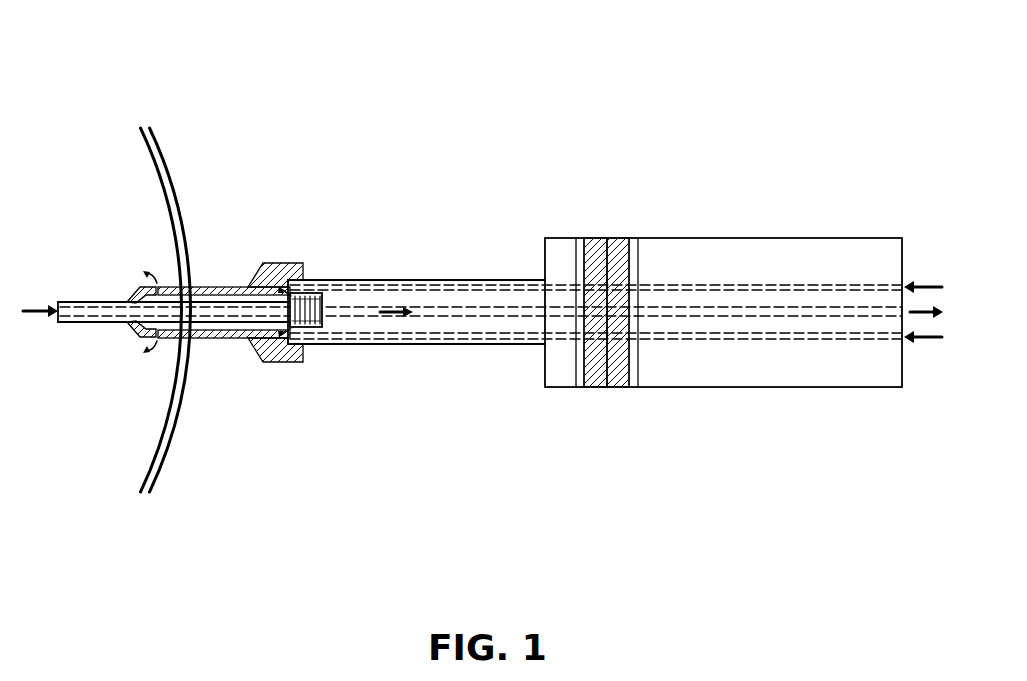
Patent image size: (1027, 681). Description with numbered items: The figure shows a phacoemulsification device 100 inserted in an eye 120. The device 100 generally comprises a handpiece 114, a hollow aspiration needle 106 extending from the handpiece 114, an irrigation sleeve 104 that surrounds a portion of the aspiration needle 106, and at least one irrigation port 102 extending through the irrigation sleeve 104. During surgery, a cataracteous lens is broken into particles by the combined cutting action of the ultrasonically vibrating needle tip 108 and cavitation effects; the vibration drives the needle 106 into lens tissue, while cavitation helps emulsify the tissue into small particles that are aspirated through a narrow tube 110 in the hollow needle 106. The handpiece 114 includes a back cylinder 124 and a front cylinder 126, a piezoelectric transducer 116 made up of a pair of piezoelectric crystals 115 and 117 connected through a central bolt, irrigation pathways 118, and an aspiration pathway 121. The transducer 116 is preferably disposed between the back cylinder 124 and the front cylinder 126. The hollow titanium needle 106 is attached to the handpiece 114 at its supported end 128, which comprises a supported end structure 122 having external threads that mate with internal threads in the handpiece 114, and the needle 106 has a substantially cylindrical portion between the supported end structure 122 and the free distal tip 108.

The phacoemulsification device 100 is at (526, 22).
The irrigation port 102 is at (156, 360).
The irrigation sleeve 104 is at (207, 287).
The hollow aspiration needle 106 is at (110, 323).
The needle tip 108 is at (63, 284).
The narrow tube 110 is at (361, 322).
The handpiece 114 is at (717, 150).
The piezoelectric crystal 115 is at (593, 237).
The piezoelectric transducer 116 is at (630, 392).
The piezoelectric crystal 117 is at (617, 237).
The irrigation pathways 118 is at (882, 285).
The eye 120 is at (183, 217).
The aspiration pathway 121 is at (842, 317).
The supported end structure 122 is at (314, 292).
The back cylinder 124 is at (706, 387).
The front cylinder 126 is at (477, 345).
The supported end 128 is at (298, 253).